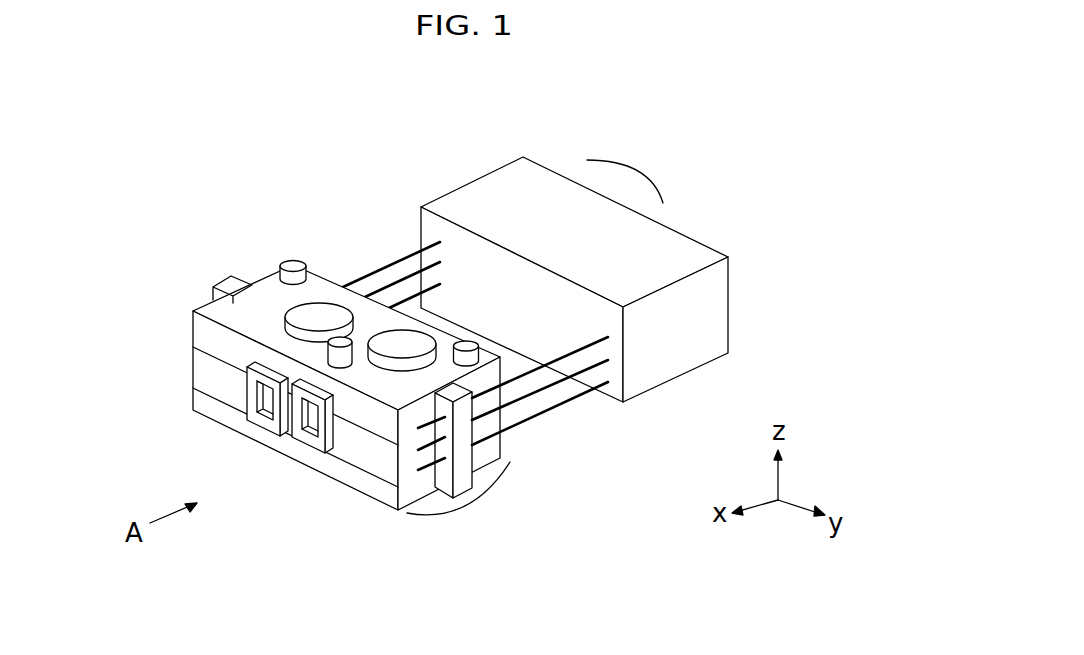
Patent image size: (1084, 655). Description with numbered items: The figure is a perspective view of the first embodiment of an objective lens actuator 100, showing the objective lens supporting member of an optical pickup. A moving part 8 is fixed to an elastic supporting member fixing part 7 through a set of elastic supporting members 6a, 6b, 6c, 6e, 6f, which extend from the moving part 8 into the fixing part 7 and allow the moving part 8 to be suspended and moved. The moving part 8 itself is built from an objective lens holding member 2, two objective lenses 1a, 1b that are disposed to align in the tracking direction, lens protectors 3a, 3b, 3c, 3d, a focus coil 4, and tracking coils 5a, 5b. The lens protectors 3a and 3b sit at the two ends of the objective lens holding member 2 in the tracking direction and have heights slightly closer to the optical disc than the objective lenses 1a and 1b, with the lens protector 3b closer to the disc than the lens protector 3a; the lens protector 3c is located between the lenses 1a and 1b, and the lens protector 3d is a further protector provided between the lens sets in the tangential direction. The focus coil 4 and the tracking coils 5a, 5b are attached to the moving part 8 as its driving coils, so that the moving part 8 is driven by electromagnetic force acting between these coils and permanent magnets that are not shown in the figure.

The objective lens actuator 100 is at (637, 168).
The objective lens 1a is at (302, 315).
The objective lens 1b is at (395, 350).
The objective lens holding member 2 is at (213, 307).
The lens protector 3a is at (286, 262).
The lens protector 3b is at (470, 364).
The lens protector 3c is at (328, 352).
The lens protector 3d is at (597, 347).
The focus coil 4 is at (356, 450).
The tracking coil 5a is at (265, 424).
The tracking coil 5b is at (300, 442).
The elastic supporting member 6a is at (414, 255).
The elastic supporting member 6b is at (400, 282).
The elastic supporting member 6c is at (405, 300).
The elastic supporting member 6e is at (592, 367).
The elastic supporting member 6f is at (480, 356).
The elastic supporting member fixing part 7 is at (697, 248).
The moving part 8 is at (482, 507).